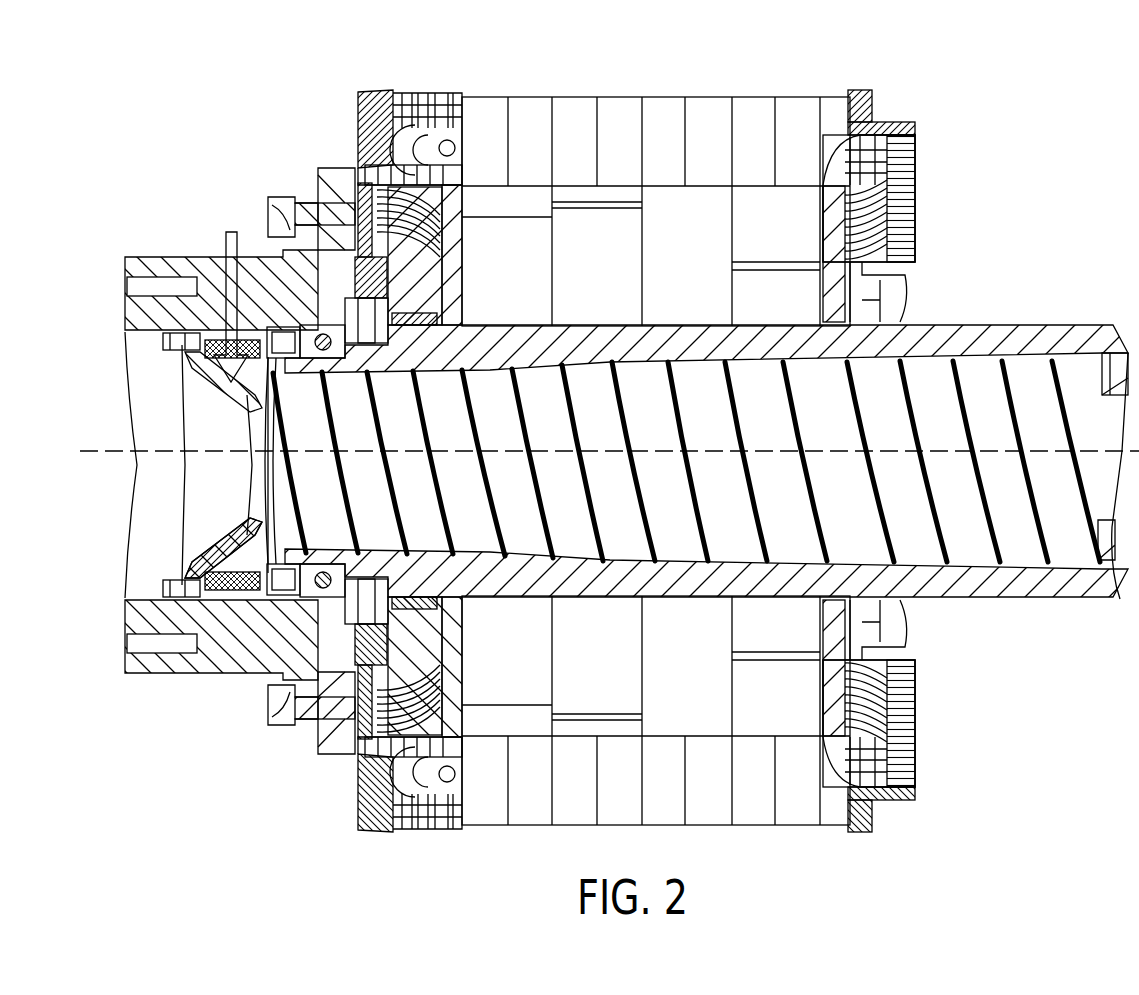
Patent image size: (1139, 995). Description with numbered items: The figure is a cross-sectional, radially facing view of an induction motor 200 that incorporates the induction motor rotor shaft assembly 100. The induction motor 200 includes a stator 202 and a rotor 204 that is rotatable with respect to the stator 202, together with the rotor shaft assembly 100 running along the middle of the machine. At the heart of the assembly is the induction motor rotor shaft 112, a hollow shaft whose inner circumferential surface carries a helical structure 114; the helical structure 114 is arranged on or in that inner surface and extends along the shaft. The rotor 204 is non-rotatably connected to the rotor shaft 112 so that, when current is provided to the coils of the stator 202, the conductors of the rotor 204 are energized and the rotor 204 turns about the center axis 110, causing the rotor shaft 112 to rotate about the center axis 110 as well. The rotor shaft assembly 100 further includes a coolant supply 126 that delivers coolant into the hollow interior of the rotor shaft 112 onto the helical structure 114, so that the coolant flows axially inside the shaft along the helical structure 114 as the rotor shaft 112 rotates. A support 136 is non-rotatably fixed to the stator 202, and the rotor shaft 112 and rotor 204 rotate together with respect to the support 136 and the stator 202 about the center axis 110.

The induction motor rotor shaft assembly 100 is at (946, 622).
The center axis 110 is at (104, 446).
The induction motor rotor shaft 112 is at (961, 303).
The helical structure 114 is at (1028, 350).
The coolant supply 126 is at (228, 580).
The support 136 is at (203, 257).
The induction motor 200 is at (920, 106).
The stator 202 is at (760, 94).
The rotor 204 is at (571, 184).